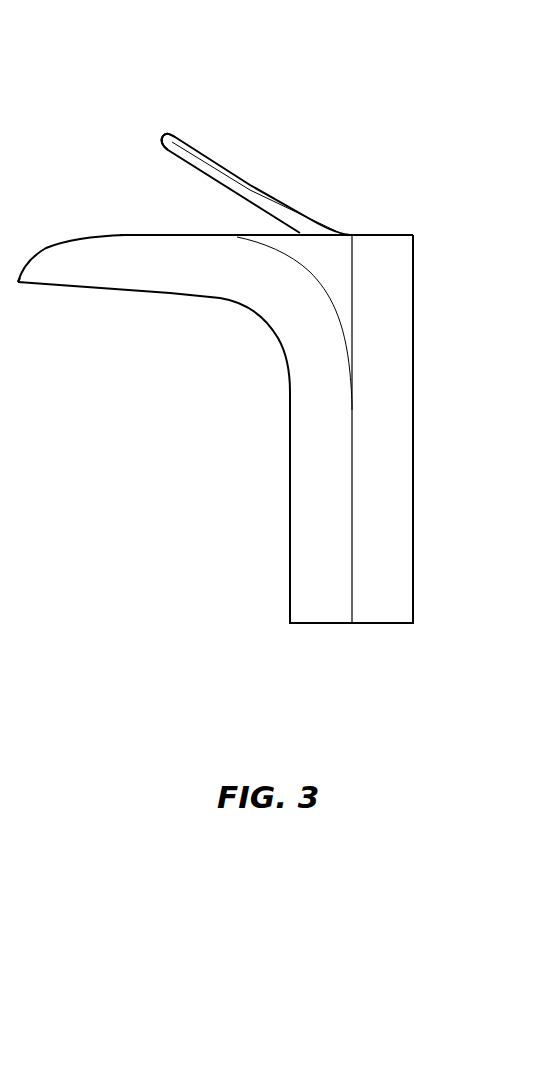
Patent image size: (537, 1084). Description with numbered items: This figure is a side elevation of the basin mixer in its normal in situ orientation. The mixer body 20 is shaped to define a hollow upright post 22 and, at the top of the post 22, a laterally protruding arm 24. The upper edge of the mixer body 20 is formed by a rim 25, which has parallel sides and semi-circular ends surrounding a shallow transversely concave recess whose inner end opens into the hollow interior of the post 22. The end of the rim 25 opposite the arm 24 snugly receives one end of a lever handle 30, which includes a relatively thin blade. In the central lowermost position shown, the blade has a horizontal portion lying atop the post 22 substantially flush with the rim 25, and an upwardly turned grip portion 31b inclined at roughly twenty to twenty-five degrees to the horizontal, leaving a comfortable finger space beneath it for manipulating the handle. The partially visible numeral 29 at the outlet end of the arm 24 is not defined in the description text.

The mixer body 20 is at (253, 349).
The post 22 is at (308, 550).
The arm 24 is at (118, 285).
The rim 25 is at (398, 234).
The outlet end of spout 29 is at (18, 284).
The lever handle 30 is at (268, 190).
The grip portion 31b is at (180, 140).